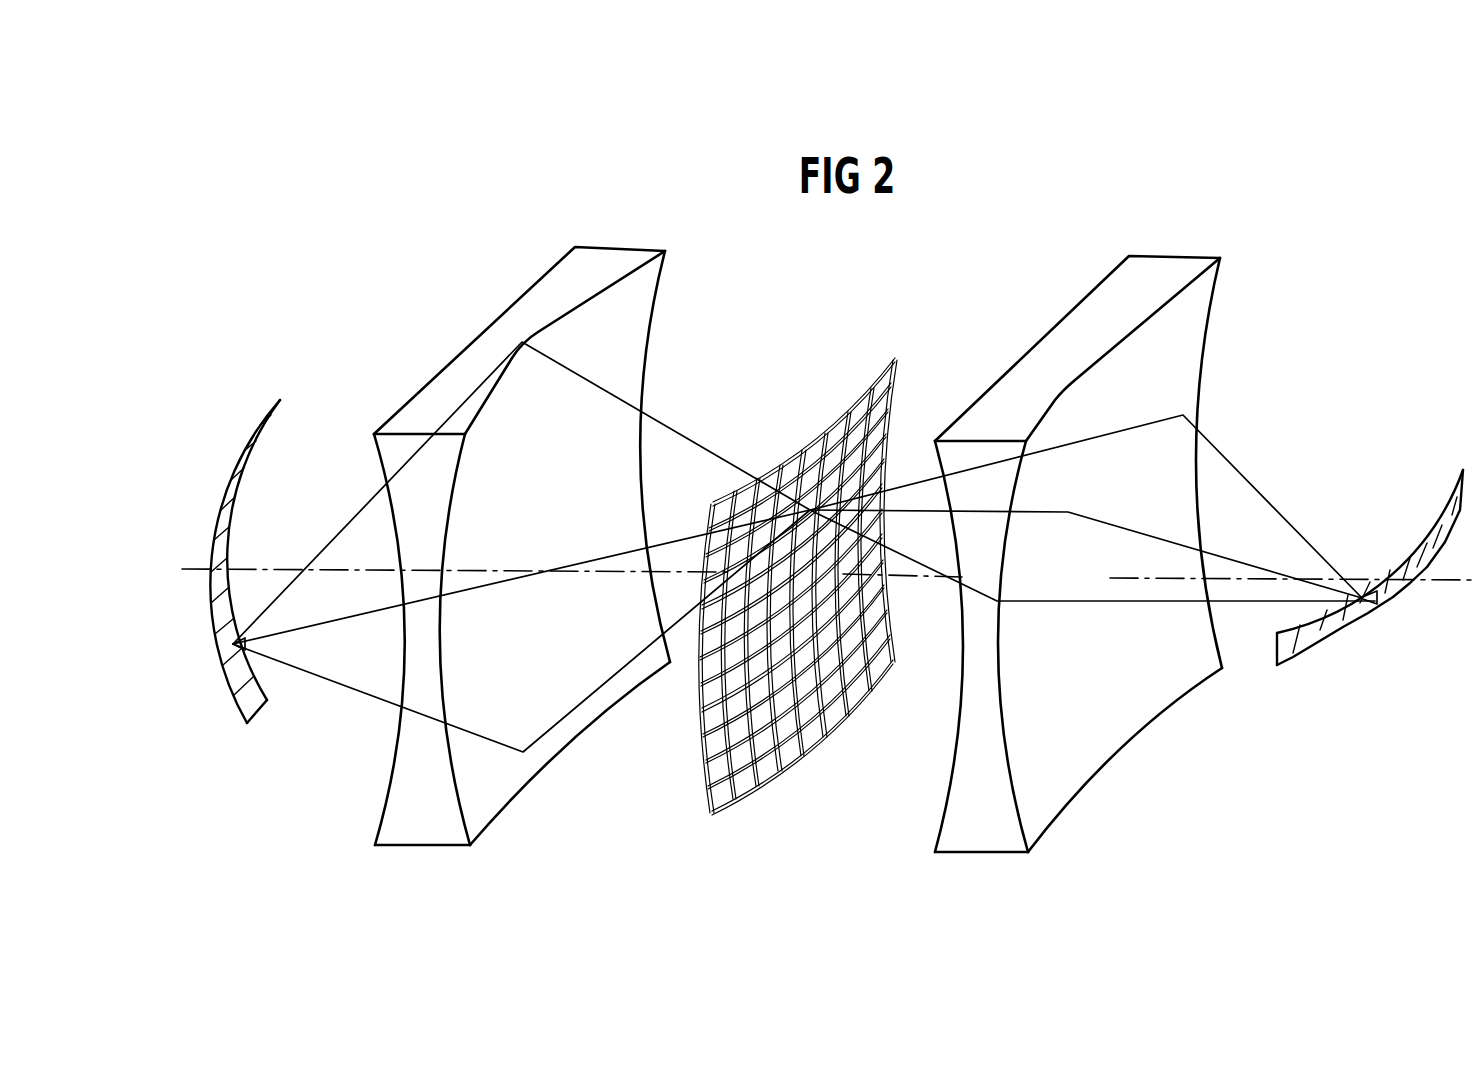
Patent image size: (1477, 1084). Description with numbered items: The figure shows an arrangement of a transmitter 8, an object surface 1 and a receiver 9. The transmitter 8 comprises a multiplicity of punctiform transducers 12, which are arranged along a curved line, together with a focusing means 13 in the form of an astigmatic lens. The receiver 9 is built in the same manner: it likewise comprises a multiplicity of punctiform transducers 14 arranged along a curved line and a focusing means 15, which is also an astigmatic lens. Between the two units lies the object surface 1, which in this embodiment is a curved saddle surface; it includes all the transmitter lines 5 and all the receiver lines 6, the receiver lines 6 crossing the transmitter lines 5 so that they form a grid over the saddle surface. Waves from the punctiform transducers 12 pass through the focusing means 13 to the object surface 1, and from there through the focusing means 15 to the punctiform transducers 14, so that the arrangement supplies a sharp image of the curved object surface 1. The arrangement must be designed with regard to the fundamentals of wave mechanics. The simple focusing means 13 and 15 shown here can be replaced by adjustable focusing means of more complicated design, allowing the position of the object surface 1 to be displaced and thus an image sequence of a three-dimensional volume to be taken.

The object surface 1 is at (840, 372).
The transmitter lines 5 is at (768, 486).
The receiver lines 6 is at (712, 793).
The transmitter 8 is at (401, 212).
The receiver 9 is at (1287, 220).
The punctiform transducers 12 is at (218, 520).
The focusing means 13 is at (652, 282).
The punctiform transducers 14 is at (1293, 653).
The focusing means 15 is at (1117, 281).